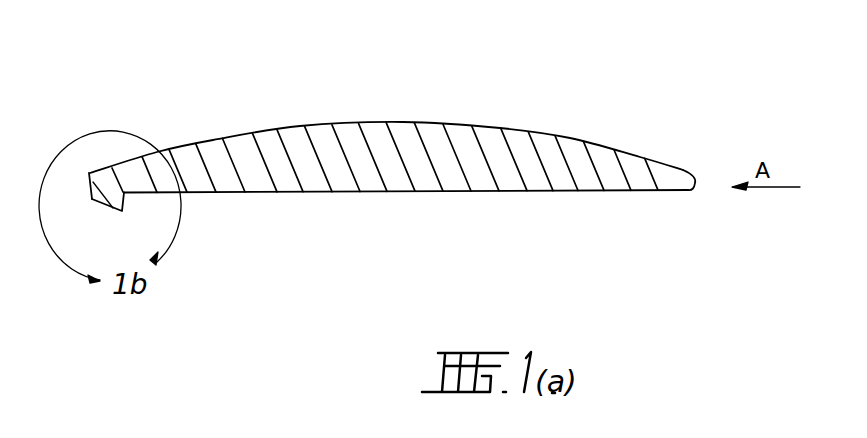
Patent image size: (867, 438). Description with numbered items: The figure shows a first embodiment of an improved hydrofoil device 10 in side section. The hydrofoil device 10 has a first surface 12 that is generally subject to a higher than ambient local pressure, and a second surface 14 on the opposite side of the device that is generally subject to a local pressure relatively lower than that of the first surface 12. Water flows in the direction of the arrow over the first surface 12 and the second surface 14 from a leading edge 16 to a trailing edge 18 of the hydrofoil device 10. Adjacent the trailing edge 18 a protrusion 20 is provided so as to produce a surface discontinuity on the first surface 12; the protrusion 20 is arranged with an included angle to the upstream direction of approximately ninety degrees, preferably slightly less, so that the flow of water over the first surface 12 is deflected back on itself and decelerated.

The hydrofoil device 10 is at (357, 166).
The first surface 12 is at (462, 192).
The second surface 14 is at (343, 122).
The leading edge 16 is at (695, 187).
The trailing edge 18 is at (88, 194).
The protrusion 20 is at (113, 208).